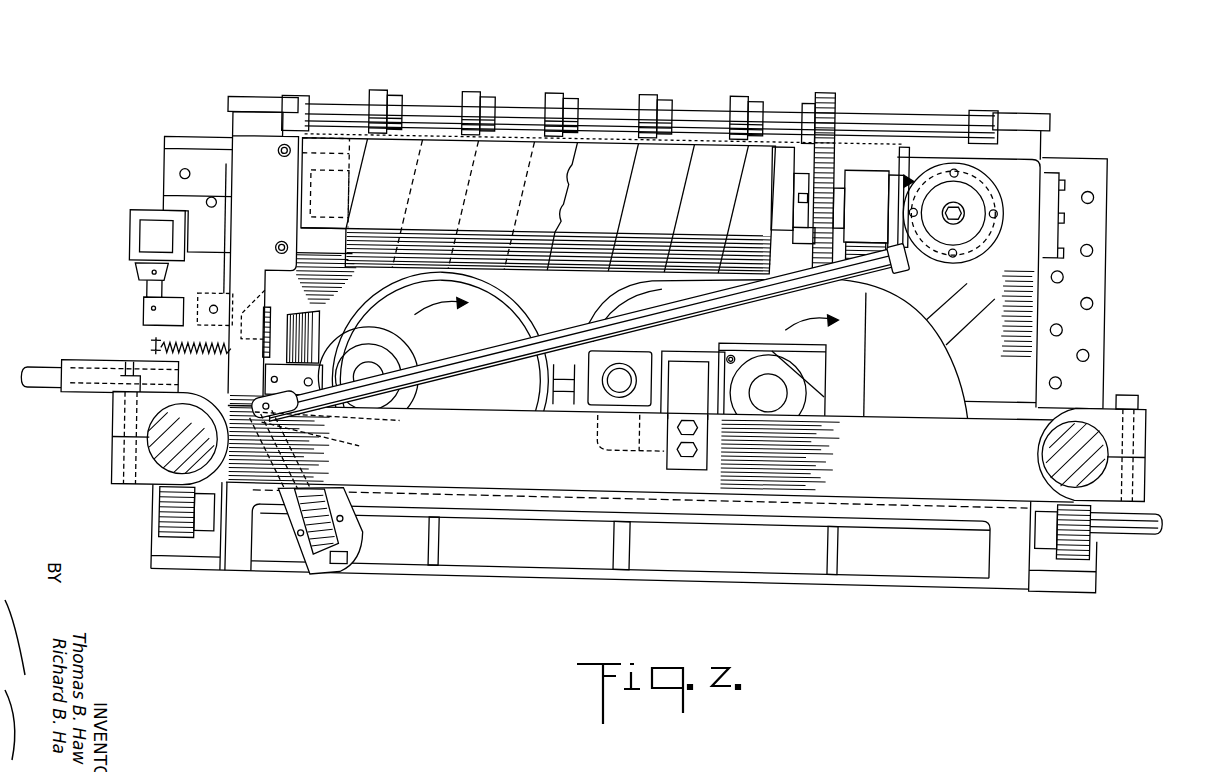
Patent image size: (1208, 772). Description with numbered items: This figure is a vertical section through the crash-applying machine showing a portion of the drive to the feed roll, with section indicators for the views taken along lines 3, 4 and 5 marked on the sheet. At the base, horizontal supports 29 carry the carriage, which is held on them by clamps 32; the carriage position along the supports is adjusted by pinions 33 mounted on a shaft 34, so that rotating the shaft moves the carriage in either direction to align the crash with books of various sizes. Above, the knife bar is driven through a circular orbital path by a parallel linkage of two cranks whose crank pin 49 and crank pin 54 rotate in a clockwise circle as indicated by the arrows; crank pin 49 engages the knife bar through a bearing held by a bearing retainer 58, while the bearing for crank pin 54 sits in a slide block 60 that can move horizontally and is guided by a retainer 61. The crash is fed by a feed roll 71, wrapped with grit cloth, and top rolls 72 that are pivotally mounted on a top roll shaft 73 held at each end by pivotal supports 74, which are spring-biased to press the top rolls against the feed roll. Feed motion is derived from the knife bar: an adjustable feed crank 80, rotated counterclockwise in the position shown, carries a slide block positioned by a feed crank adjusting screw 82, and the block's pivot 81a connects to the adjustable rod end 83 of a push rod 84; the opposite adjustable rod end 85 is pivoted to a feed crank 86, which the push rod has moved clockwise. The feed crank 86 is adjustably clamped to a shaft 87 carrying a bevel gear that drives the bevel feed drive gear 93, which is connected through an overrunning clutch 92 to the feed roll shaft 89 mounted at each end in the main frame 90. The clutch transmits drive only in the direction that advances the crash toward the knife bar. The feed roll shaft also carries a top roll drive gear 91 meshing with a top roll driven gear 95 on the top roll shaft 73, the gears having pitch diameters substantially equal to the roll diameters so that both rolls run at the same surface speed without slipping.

The section line 3- 3 is at (152, 101).
The section line 4- 4 is at (258, 44).
The section line 5- 5 is at (93, 186).
The horizontal supports 29 is at (151, 448).
The clamps 32 is at (118, 420).
The pinions 33 is at (167, 527).
The shaft 34 is at (607, 520).
The crank pin 49 is at (368, 381).
The crank pin 54 is at (762, 387).
The bearing retainer 58 is at (417, 358).
The slide block 60 is at (812, 358).
The retainer 61 is at (812, 393).
The feed roll 71 is at (656, 206).
The top rolls 72 is at (558, 98).
The top roll shaft 73 is at (593, 120).
The pivotal supports 74 is at (300, 102).
The adjustable feed crank 80 is at (310, 562).
The pivot 81a is at (276, 463).
The feed crank adjusting screw 82 is at (338, 565).
The adjustable rod end 83 is at (321, 438).
The push rod 84 is at (507, 381).
The adjustable rod end 85 is at (895, 252).
The feed crank 86 is at (915, 254).
The shaft 87 is at (963, 204).
The feed roll shaft 89 is at (777, 190).
The main frame 90 is at (290, 298).
The top roll drive gear 91 is at (807, 254).
The overrunning clutch 92 is at (867, 215).
The bevel feed drive gear 93 is at (908, 164).
The top roll driven gear 95 is at (821, 91).